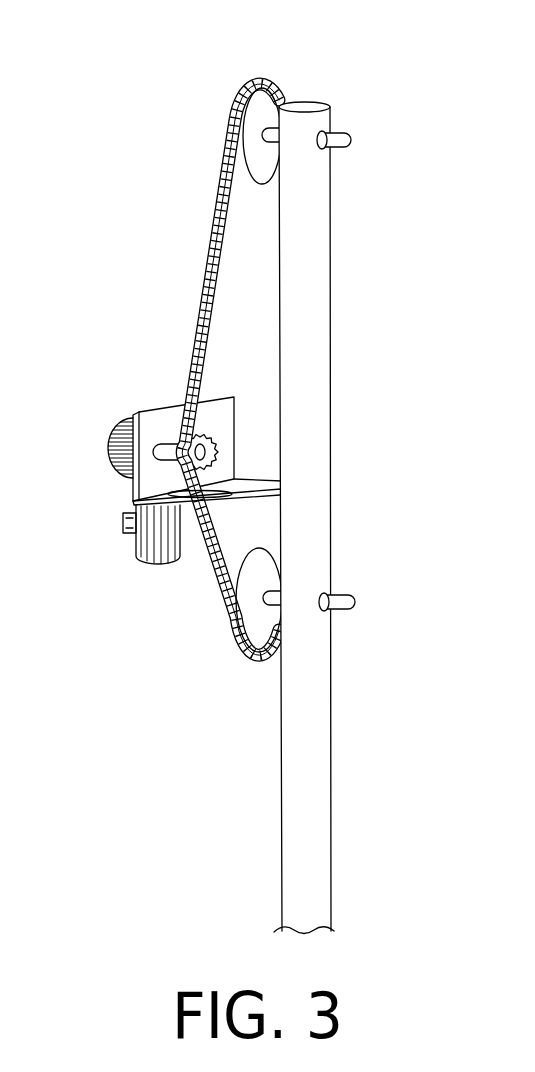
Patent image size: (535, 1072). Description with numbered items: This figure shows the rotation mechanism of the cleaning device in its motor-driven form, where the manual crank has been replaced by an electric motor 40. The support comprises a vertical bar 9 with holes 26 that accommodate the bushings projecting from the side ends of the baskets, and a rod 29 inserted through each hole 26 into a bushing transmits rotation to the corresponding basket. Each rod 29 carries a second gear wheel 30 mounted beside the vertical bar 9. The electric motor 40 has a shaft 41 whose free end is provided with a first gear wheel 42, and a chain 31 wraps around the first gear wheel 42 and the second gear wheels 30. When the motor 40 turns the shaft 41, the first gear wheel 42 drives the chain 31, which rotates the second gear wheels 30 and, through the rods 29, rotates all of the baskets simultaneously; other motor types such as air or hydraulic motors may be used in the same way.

The vertical bar 9 is at (295, 337).
The hole 26 is at (325, 150).
The rod 29 is at (343, 138).
The second gear wheel 30 is at (265, 115).
The chain 31 is at (212, 252).
The electric motor 40 is at (103, 430).
The shaft 41 is at (162, 447).
The first gear wheel 42 is at (207, 450).